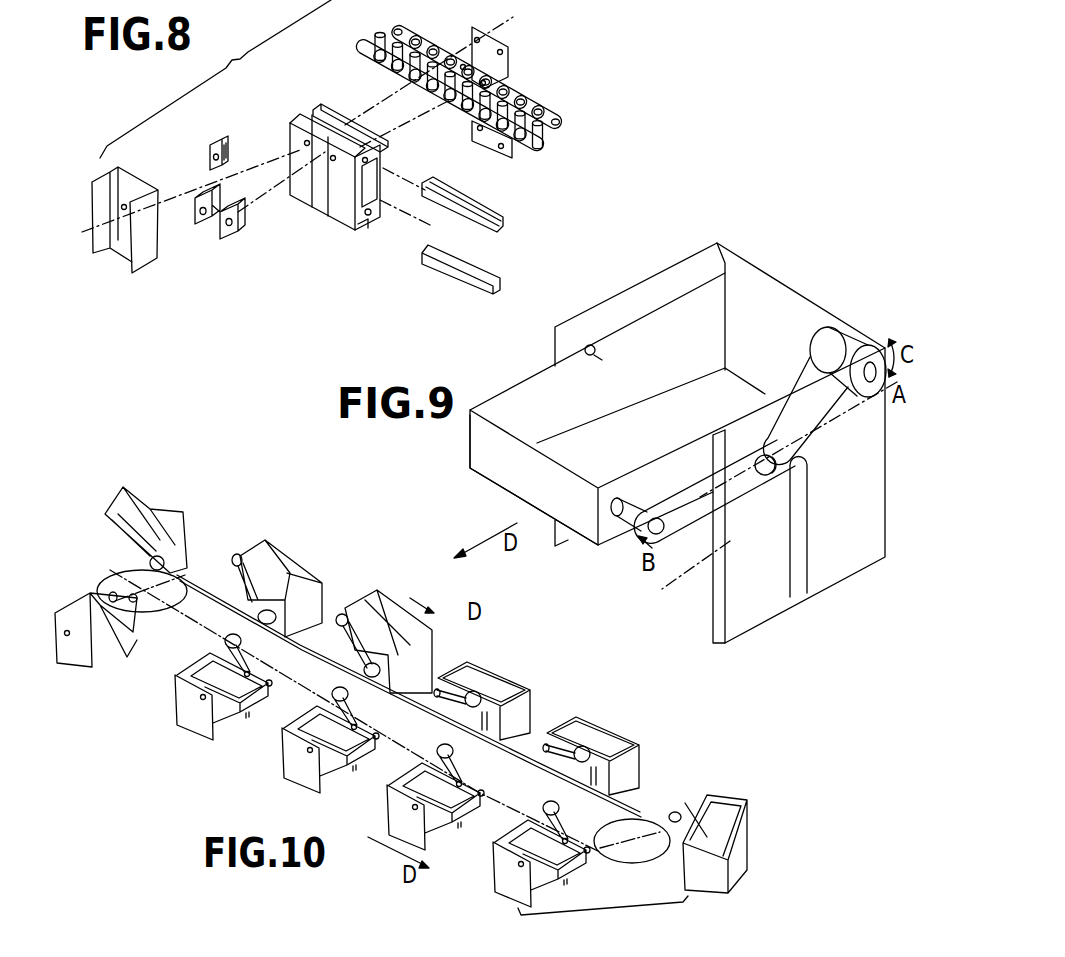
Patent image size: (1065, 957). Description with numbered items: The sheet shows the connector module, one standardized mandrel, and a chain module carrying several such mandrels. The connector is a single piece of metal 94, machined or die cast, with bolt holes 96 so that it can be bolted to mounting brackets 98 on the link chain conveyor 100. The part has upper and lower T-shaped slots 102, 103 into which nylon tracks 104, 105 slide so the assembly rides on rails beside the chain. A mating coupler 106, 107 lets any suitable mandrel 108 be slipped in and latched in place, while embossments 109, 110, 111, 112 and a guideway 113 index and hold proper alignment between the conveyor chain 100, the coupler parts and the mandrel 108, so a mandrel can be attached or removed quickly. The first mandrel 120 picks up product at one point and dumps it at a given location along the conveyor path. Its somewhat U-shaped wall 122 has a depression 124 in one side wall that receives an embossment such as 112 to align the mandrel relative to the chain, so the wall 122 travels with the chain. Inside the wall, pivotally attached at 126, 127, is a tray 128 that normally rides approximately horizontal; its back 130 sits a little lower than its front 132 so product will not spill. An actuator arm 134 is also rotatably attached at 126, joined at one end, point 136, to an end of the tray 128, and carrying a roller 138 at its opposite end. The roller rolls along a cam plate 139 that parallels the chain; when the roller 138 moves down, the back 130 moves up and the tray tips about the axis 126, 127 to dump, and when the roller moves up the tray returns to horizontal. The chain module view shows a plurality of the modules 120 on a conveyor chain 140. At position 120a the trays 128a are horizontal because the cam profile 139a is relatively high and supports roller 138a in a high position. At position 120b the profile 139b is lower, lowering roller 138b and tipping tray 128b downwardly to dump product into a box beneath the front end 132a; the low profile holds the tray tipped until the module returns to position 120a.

In FIG. 8, the single piece of metal 94 is at (377, 145).
In FIG. 8, the bolt holes 96 is at (307, 140).
In FIG. 8, the mounting brackets 98 is at (512, 52).
In FIG. 8, the link chain conveyor 100 is at (543, 99).
In FIG. 8, the upper T-shaped slot 102 is at (380, 164).
In FIG. 8, the lower T-shaped slot 103 is at (366, 220).
In FIG. 8, the nylon track 104 is at (500, 223).
In FIG. 8, the nylon track 105 is at (497, 272).
In FIG. 8, the mating coupler 106 is at (240, 234).
In FIG. 8, the mating coupler 107 is at (218, 145).
In FIG. 8, the mandrel 108 is at (153, 268).
In FIG. 8, the embossment 109 is at (331, 155).
In FIG. 8, the embossment 110 is at (376, 147).
In FIG. 8, the embossment 111 is at (371, 209).
In FIG. 8, the embossment 112 is at (317, 213).
In FIG. 8, the guideway 113 is at (386, 174).
In FIG. 9, the first mandrel 120 is at (660, 435).
In FIG. 10, the first mandrel 120 is at (643, 766).
In FIG. 9, the U-shaped wall 122 is at (807, 302).
In FIG. 9, the depression 124 is at (797, 593).
In FIG. 9, the pivot point 126 is at (603, 359).
In FIG. 9, the pivot point 127 is at (768, 477).
In FIG. 9, the tray 128 is at (540, 362).
In FIG. 9, the back of tray 130 is at (490, 470).
In FIG. 9, the front of tray 132 is at (733, 377).
In FIG. 9, the actuator arm 134 is at (685, 508).
In FIG. 9, the attachment point 136 is at (633, 513).
In FIG. 9, the roller 138 is at (856, 389).
In FIG. 9, the cam plate 139 is at (882, 397).
In FIG. 10, the module position 120a is at (196, 648).
In FIG. 10, the tray 128a is at (227, 700).
In FIG. 10, the front end 132a is at (102, 663).
In FIG. 10, the roller 138a is at (179, 664).
In FIG. 10, the cam profile 139a is at (232, 648).
In FIG. 10, the module position 120b is at (438, 624).
In FIG. 10, the tray 128b is at (353, 594).
In FIG. 10, the roller 138b is at (380, 664).
In FIG. 10, the cam profile 139b is at (506, 677).
In FIG. 10, the conveyor chain 140 is at (643, 815).